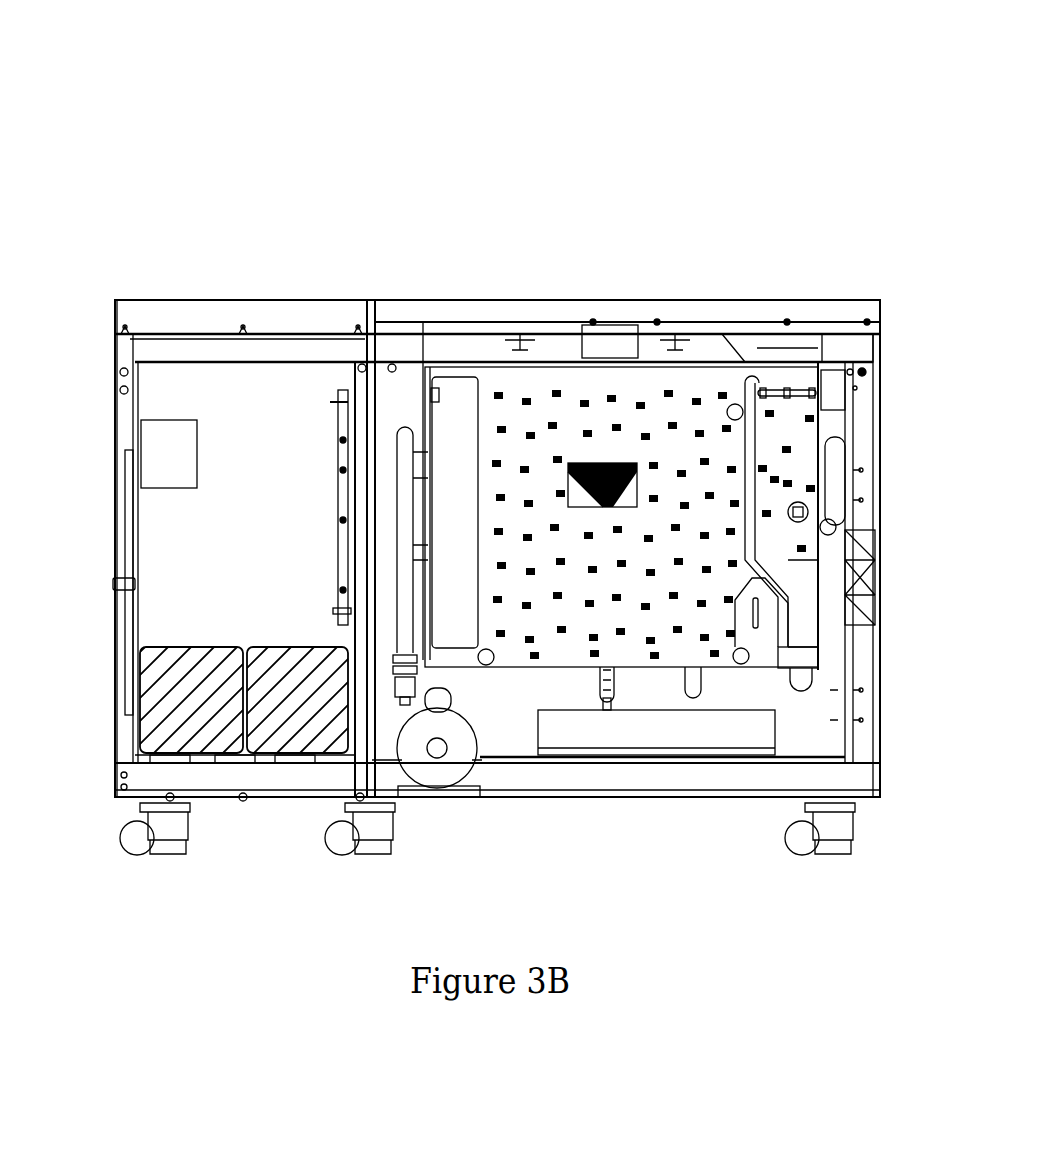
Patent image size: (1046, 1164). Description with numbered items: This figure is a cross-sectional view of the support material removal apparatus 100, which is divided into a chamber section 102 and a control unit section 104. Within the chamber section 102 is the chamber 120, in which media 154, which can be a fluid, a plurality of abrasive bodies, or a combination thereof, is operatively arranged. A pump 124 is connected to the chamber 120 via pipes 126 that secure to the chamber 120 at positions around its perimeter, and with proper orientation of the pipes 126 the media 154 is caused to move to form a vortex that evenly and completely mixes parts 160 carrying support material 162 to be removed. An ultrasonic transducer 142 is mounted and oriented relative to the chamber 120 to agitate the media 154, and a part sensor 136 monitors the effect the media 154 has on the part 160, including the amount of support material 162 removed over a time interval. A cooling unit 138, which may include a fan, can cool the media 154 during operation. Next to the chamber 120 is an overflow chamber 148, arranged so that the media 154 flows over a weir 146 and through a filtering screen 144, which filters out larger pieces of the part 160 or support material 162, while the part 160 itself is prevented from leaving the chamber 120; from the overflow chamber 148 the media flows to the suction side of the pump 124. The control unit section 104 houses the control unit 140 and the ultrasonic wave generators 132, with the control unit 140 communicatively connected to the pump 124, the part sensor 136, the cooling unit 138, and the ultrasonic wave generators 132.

The support material removal apparatus 100 is at (292, 177).
The chamber section 102 is at (567, 300).
The control unit section 104 is at (228, 298).
The chamber 120 is at (712, 676).
The pump 124 is at (403, 787).
The pipes 126 is at (400, 425).
The ultrasonic wave generators 132 is at (156, 752).
The part sensor 136 is at (626, 325).
The cooling unit 138 is at (876, 534).
The control unit 140 is at (157, 412).
The ultrasonic transducer 142 is at (461, 375).
The filtering screen 144 is at (800, 389).
The weir 146 is at (755, 360).
The overflow chamber 148 is at (803, 588).
The media 154 is at (694, 440).
The part 160 is at (621, 508).
The support material 162 is at (582, 512).